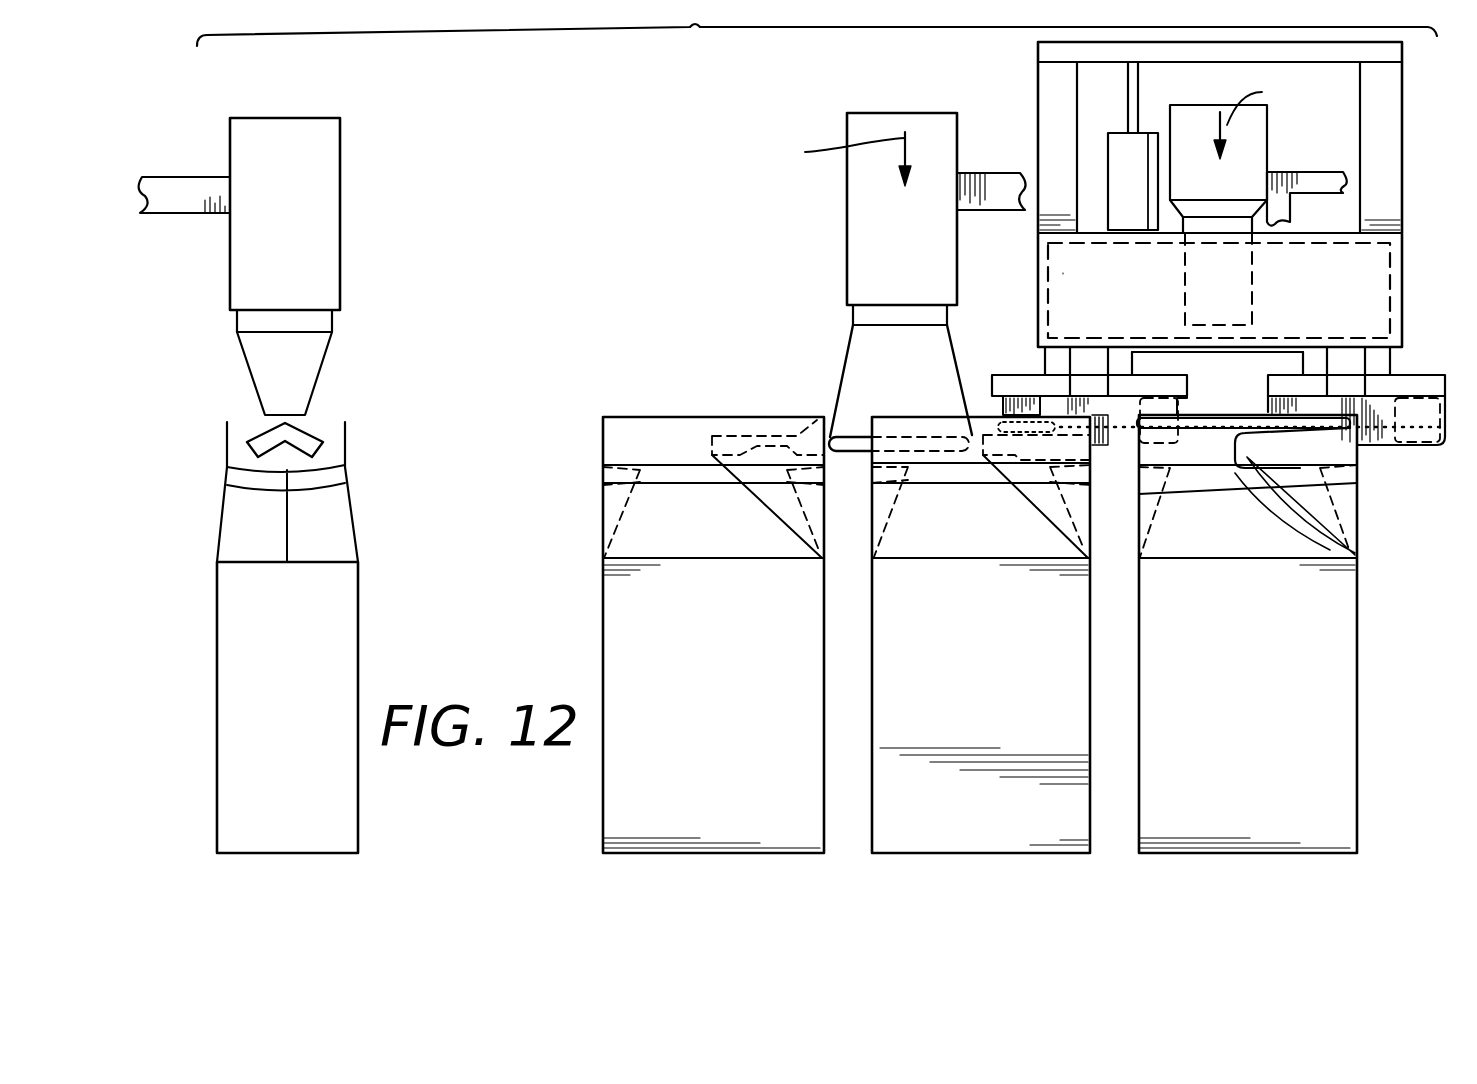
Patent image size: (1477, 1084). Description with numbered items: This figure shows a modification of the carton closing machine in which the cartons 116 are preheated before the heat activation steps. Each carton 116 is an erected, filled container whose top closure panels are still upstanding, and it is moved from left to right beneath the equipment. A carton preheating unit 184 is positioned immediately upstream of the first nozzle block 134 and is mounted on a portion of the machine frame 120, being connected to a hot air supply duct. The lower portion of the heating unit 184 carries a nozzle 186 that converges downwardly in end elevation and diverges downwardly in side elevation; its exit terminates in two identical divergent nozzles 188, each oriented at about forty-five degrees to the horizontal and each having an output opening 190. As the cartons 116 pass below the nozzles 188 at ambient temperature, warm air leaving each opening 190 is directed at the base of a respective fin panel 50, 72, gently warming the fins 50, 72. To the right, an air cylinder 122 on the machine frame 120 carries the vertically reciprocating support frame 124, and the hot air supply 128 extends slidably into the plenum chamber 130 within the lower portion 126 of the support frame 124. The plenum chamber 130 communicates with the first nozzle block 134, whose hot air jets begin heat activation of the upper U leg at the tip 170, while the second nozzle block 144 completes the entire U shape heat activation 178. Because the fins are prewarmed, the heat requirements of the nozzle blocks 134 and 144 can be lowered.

The fin panel 50 is at (347, 442).
The fin panel 72 is at (228, 428).
The carton 116 is at (302, 642).
The machine frame 120 is at (202, 205).
The air cylinder 122 is at (1152, 217).
The support frame 124 is at (1395, 212).
The lower portion of support frame 126 is at (1403, 270).
The hot air supply 128 is at (1240, 189).
The plenum chamber 130 is at (1063, 273).
The first nozzle block 134 is at (1023, 374).
The second nozzle block 144 is at (1398, 372).
The tip of upper U leg heat activation 170 is at (1020, 427).
The entire U shape heat activation 178 is at (1356, 553).
The carton preheating unit 184 is at (302, 219).
The nozzle 186 is at (293, 357).
The divergent nozzle 188 is at (250, 427).
The output opening 190 is at (856, 440).